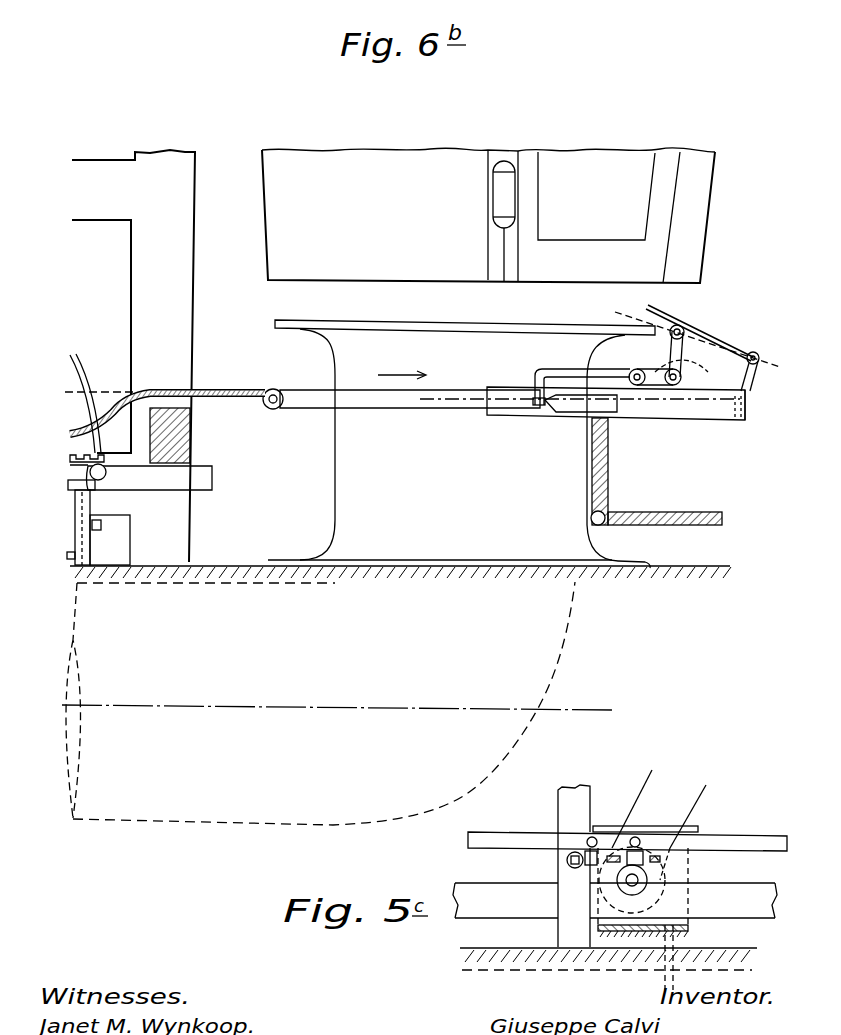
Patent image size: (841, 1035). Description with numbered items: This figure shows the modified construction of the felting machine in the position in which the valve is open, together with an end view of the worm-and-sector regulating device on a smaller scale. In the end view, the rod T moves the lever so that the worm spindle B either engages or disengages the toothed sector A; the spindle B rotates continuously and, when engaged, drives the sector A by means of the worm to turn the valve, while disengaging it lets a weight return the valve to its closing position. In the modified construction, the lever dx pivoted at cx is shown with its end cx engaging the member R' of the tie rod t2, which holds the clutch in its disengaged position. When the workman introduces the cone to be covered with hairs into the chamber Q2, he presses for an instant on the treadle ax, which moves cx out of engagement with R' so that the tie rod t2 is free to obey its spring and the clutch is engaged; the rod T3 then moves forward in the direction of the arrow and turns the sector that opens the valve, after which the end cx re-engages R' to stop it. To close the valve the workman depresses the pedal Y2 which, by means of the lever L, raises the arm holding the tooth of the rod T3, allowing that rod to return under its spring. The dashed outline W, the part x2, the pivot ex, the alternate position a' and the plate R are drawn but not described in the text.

In FIG. 6B, the chamber Q2 is at (596, 197).
In FIG. 6B, the frame rib x2 is at (681, 217).
In FIG. 6B, the lever L is at (504, 403).
In FIG. 6B, the worm spindle B is at (748, 400).
In FIG. 6B, the member of the tie rod R' is at (581, 421).
In FIG. 6B, the end of the lever dx cx is at (535, 385).
In FIG. 6B, the pivot link ex is at (655, 361).
In FIG. 6B, the lever dx is at (681, 357).
In FIG. 6B, the treadle ax is at (702, 336).
In FIG. 6B, the lever alternate position a' is at (696, 333).
In FIG. 6B, the pedal Y2 is at (715, 510).
In FIG. 6B, the sector A is at (85, 396).
In FIG. 6B, the tie rod t2 is at (242, 374).
In FIG. 6B, the rod T3 is at (141, 473).
In FIG. 6B, the work piece W is at (555, 677).
In FIG. 5C, the rod T is at (752, 842).
In FIG. 5C, the rack plate R is at (649, 825).